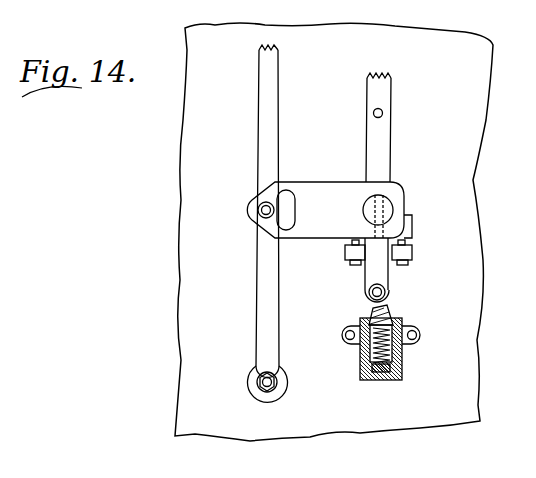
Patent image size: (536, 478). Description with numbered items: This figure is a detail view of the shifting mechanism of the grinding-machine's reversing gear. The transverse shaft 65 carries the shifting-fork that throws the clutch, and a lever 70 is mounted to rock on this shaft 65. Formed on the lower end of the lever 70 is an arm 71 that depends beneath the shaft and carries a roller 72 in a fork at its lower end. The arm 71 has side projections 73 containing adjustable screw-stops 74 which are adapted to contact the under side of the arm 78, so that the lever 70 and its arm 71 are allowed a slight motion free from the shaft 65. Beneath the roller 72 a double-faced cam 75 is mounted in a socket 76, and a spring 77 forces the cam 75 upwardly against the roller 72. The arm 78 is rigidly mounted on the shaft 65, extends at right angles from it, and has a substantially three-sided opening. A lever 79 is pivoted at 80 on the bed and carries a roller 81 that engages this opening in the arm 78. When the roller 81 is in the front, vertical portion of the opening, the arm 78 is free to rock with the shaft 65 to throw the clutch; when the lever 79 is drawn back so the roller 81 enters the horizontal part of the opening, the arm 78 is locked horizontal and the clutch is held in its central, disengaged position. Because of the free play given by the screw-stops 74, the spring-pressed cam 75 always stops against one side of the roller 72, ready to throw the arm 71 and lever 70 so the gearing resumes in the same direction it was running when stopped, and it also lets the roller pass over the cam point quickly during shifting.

The transverse shaft 65 is at (384, 208).
The lever 70 is at (380, 133).
The arm 71 is at (380, 268).
The roller 72 is at (392, 297).
The side projections 73 is at (408, 247).
The adjustable screw-stops 74 is at (348, 259).
The double-faced cam 75 is at (374, 315).
The socket 76 is at (362, 358).
The spring 77 is at (400, 368).
The arm 78 is at (312, 188).
The lever 79 is at (260, 302).
The pivot 80 is at (278, 380).
The roller 81 is at (254, 205).